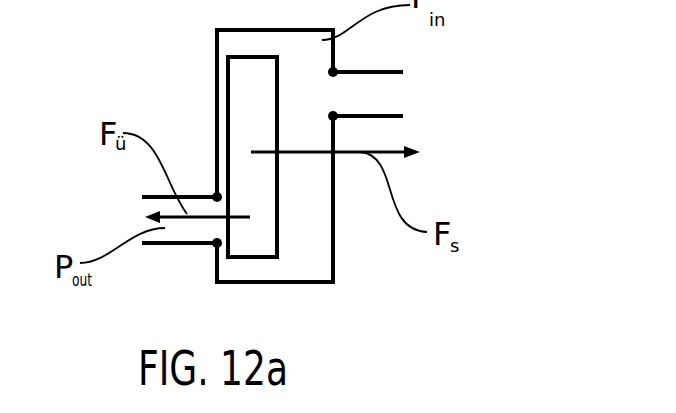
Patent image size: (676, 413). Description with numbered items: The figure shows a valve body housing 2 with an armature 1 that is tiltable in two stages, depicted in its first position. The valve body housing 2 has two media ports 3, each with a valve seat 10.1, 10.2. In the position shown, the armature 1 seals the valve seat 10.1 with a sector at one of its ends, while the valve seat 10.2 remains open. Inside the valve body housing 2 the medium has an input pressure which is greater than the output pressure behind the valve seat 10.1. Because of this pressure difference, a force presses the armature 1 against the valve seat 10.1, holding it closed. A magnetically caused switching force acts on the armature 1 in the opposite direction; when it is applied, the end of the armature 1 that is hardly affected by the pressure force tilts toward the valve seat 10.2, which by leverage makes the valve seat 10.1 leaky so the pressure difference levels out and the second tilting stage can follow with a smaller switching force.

The armature 1 is at (238, 80).
The valve body housing 2 is at (217, 120).
The media ports 3 is at (395, 80).
The valve seat 10.1 is at (215, 228).
The valve seat 10.2 is at (333, 98).